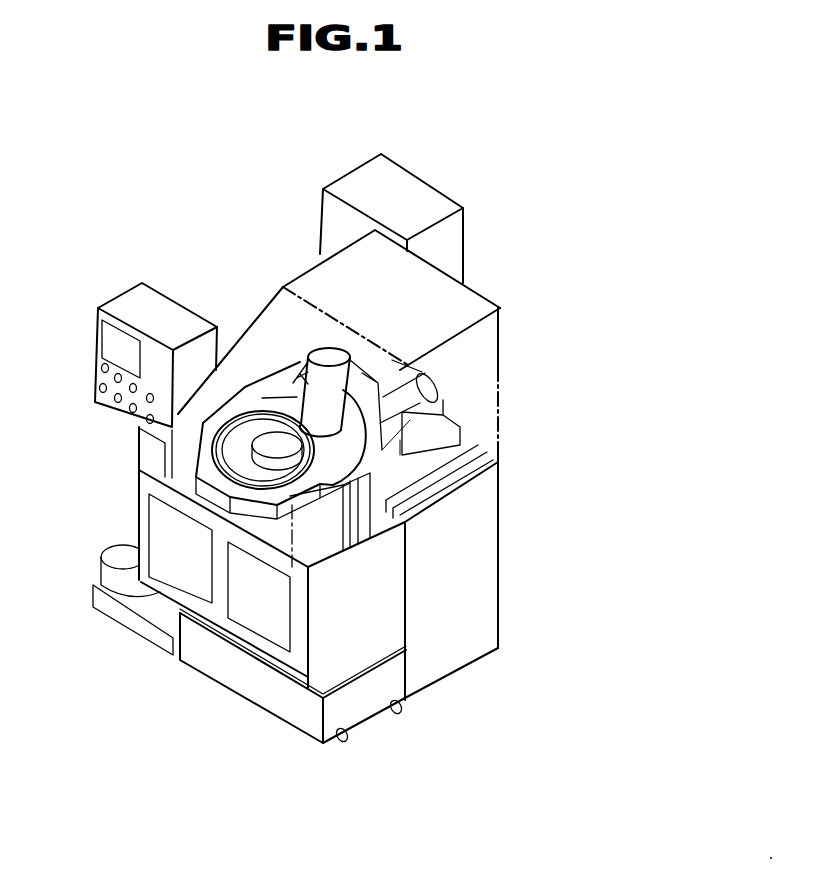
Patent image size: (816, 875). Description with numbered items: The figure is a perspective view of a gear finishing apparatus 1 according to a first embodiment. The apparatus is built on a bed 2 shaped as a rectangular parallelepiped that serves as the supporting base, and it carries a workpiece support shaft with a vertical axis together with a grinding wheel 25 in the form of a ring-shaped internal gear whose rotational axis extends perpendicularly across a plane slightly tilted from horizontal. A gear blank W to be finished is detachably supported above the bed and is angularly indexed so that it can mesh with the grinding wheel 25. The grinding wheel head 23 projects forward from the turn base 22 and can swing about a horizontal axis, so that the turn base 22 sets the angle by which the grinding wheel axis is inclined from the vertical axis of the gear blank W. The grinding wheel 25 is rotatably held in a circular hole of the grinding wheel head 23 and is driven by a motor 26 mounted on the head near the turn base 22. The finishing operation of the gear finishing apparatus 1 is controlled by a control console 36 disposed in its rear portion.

The gear finishing apparatus 1 is at (600, 222).
The bed 2 is at (472, 609).
The turn base 22 is at (413, 408).
The grinding wheel head 23 is at (207, 457).
The grinding wheel 25 is at (200, 426).
The motor 26 is at (322, 386).
The control console 36 is at (407, 193).
The gear blank W is at (230, 490).